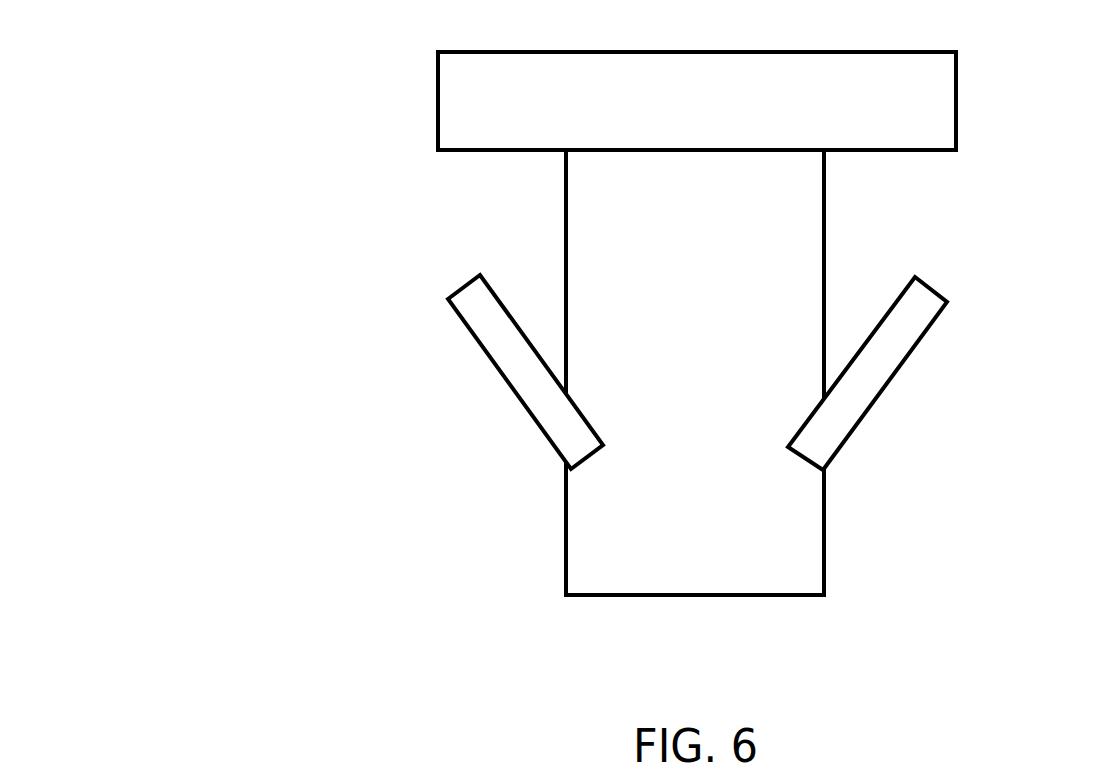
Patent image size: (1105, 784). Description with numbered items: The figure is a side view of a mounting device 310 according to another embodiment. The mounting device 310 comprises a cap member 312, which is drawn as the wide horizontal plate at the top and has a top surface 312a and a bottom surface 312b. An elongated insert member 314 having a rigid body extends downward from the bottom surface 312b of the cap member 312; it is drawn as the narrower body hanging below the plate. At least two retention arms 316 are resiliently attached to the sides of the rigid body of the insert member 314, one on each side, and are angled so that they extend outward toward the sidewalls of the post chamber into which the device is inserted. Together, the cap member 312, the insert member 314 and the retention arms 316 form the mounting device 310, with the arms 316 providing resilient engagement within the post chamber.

The mounting device 310 is at (340, 85).
The cap member 312 is at (958, 97).
The top surface 312a is at (738, 32).
The bottom surface 312b is at (746, 169).
The shaft / body 314 is at (800, 220).
The retention arms 316 is at (500, 378).